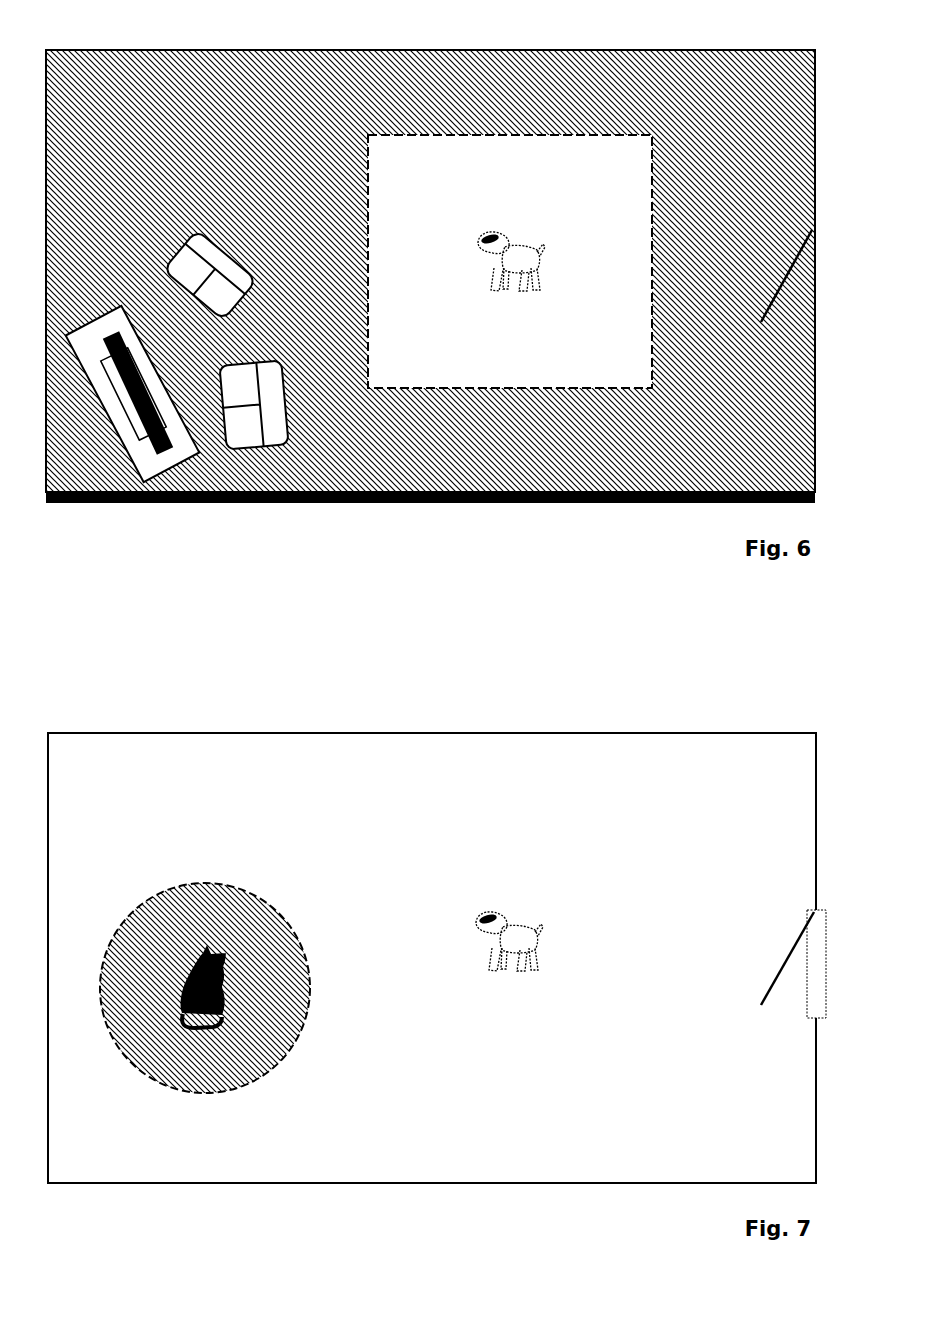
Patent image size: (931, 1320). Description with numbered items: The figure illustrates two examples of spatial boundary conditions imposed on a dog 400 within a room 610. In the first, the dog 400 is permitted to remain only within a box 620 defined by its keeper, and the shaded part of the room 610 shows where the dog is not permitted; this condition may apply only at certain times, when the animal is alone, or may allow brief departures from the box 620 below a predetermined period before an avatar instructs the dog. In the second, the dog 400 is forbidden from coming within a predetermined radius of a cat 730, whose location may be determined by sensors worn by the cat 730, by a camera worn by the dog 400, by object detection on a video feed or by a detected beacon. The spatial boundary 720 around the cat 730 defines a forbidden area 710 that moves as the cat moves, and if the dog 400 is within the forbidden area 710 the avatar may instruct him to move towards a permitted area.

In FIG. 6, the room 610 is at (185, 96).
In FIG. 6, the box 620 is at (580, 133).
In FIG. 6, the dog 400 is at (544, 264).
In FIG. 7, the dog 400 is at (543, 945).
In FIG. 7, the forbidden area 710 is at (212, 913).
In FIG. 7, the spatial boundary 720 is at (302, 936).
In FIG. 7, the cat 730 is at (215, 1024).